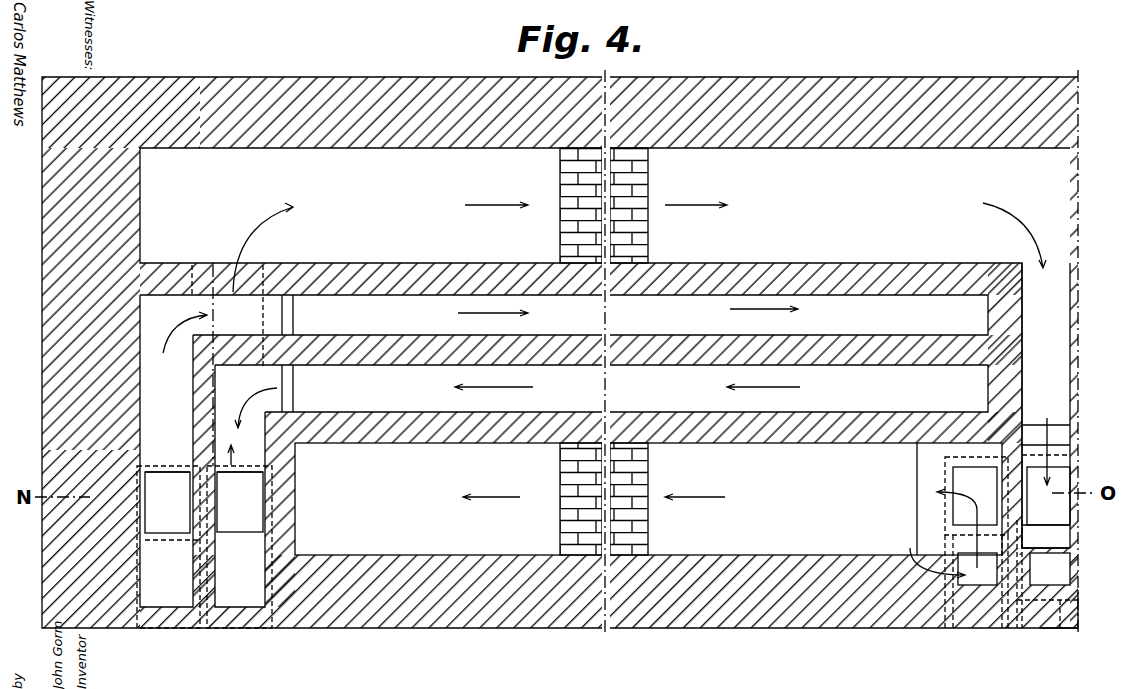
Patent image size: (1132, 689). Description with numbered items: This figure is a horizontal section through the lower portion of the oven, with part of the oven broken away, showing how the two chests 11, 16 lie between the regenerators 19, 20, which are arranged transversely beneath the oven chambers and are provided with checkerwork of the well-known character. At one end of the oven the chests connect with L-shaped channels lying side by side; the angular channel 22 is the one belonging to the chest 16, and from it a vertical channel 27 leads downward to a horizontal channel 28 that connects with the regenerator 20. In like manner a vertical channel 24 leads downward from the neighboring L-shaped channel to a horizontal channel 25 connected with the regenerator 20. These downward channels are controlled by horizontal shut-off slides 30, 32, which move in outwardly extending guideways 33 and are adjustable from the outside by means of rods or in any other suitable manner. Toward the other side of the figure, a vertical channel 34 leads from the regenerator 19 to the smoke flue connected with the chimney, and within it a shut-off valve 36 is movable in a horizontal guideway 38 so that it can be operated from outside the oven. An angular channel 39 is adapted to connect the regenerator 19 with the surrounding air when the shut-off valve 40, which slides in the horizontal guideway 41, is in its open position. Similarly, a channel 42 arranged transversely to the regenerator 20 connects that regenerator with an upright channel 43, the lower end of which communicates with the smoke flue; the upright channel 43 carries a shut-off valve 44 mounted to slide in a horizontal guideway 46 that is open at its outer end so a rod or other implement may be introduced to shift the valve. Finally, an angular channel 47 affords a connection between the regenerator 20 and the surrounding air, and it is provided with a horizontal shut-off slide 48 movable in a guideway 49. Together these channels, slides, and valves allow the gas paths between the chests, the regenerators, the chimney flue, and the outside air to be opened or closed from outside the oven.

The chest 11 is at (601, 388).
The chest 16 is at (564, 315).
The regenerator 19 is at (660, 525).
The regenerator 20 is at (660, 178).
The angular or L-shaped channel 22 is at (173, 451).
The vertical channel 24 is at (260, 515).
The horizontal channel 25 is at (263, 275).
The vertical channel 27 is at (255, 450).
The horizontal channel 28 is at (186, 273).
The horizontal shut-off slide 30 is at (255, 620).
The horizontal shut-off slide 32 is at (167, 527).
The guideway 33 is at (195, 622).
The vertical channel 34 is at (953, 478).
The shut-off valve 36 is at (958, 510).
The horizontal guideway 38 is at (943, 624).
The angular channel 39 is at (925, 555).
The shut-off valve 40 is at (977, 624).
The horizontal guideway 41 is at (953, 624).
The channel 42 is at (1046, 405).
The upright channel 43 is at (1070, 468).
The shut-off valve 44 is at (1078, 622).
The horizontal guideway 46 is at (1018, 624).
The angular channel 47 is at (1067, 575).
The horizontal shut-off slide 48 is at (1053, 557).
The guideway 49 is at (1040, 613).